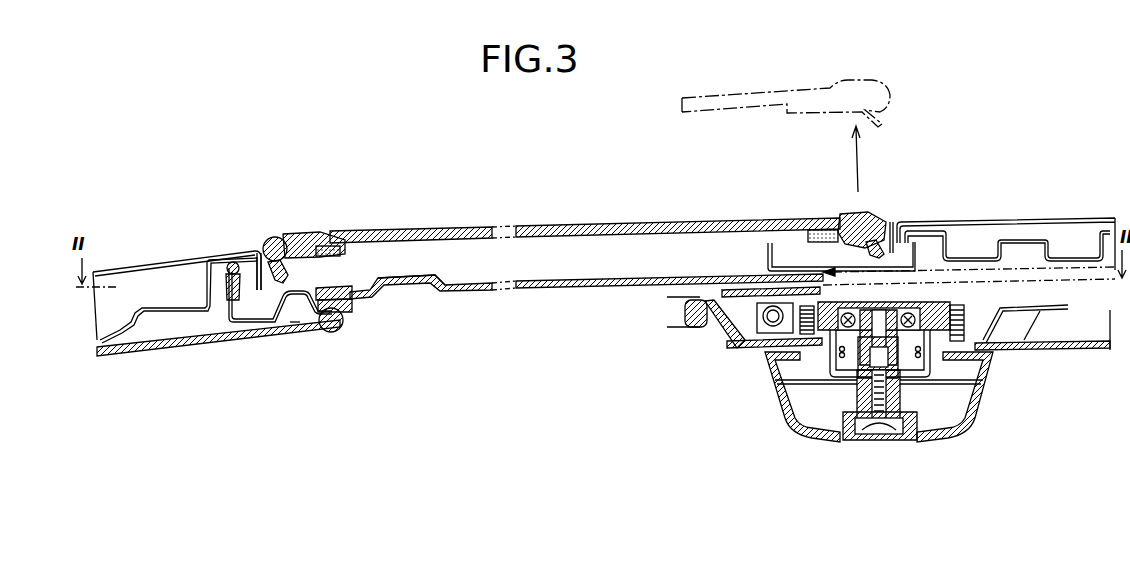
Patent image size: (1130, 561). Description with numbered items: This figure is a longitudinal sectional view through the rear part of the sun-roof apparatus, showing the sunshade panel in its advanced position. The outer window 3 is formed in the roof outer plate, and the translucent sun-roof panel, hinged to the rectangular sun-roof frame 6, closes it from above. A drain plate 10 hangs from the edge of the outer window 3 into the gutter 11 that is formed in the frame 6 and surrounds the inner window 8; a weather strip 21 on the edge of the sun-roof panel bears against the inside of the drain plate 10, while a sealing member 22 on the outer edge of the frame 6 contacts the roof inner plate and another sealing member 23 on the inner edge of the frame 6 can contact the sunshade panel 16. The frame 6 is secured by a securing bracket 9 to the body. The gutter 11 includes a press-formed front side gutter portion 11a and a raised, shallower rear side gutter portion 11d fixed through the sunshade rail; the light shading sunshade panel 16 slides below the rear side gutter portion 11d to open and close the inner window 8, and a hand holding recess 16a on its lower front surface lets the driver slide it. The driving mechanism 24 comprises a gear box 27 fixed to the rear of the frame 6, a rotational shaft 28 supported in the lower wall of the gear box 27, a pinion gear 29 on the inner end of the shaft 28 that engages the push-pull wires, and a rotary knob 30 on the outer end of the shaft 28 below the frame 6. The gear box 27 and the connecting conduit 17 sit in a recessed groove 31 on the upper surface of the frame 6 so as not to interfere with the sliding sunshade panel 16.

The outer window 3 is at (270, 244).
The sun-roof frame 6 is at (322, 326).
The inner window 8 is at (345, 320).
The securing bracket 9 is at (293, 317).
The drain plate 10 is at (260, 280).
The gutter 11 is at (226, 324).
The front side gutter portion 11a is at (266, 327).
The rear side gutter portion 11d is at (768, 258).
The sunshade panel 16 is at (485, 287).
The hand holding recess 16a is at (437, 287).
The connecting conduit 17 is at (744, 317).
The weather strip 21 is at (291, 232).
The sealing member 22 is at (226, 268).
The sealing member 23 is at (320, 290).
The driving mechanism 24 is at (768, 408).
The gear box 27 is at (928, 305).
The rotational shaft 28 is at (915, 362).
The pinion gear 29 is at (880, 310).
The rotary knob 30 is at (835, 433).
The recessed groove 31 is at (1003, 326).